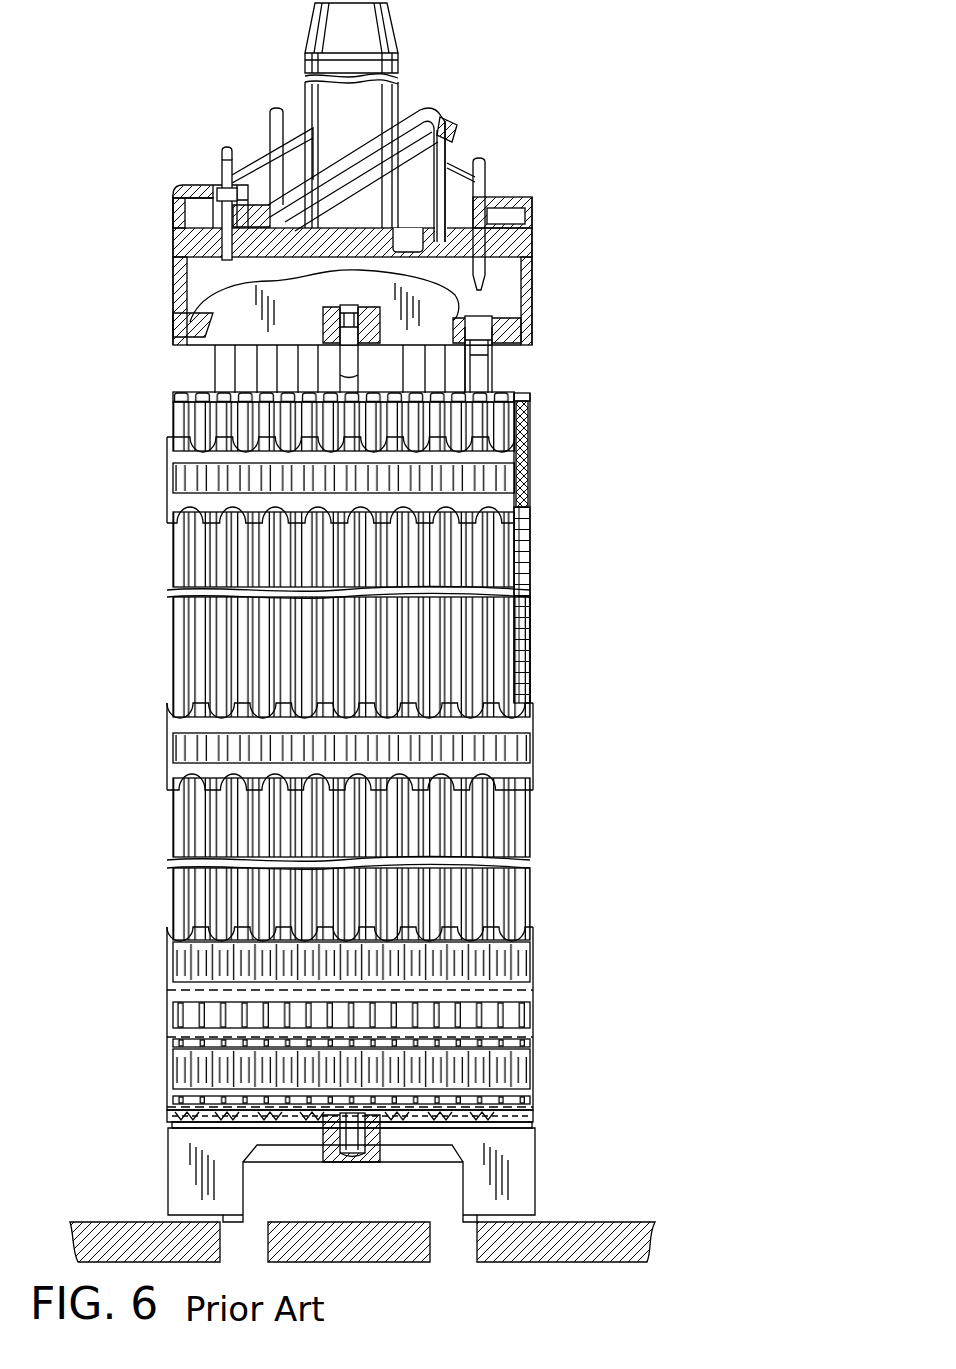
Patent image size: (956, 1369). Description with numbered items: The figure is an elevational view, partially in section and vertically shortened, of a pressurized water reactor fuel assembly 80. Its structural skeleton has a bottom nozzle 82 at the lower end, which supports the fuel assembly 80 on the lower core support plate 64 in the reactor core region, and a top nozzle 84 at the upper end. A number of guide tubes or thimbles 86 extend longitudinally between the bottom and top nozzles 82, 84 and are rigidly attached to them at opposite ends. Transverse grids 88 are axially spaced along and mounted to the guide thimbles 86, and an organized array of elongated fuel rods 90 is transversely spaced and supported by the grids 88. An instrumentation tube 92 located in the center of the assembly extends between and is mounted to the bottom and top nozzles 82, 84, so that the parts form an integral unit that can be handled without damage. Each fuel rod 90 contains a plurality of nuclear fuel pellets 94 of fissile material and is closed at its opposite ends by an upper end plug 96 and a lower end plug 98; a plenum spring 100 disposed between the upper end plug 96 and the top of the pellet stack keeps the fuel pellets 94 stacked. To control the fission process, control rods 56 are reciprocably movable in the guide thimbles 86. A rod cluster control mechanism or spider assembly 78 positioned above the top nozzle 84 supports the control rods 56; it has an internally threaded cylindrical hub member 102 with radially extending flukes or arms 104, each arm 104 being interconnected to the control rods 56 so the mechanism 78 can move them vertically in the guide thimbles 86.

The control rods 56 is at (535, 324).
The lower core support plate 64 is at (575, 1222).
The rod cluster control mechanism 78 is at (448, 106).
The fuel assembly 80 is at (620, 255).
The bottom nozzle 82 is at (542, 1167).
The top nozzle 84 is at (538, 243).
The guide thimbles 86 is at (213, 380).
The transverse grids 88 is at (175, 490).
The fuel rods 90 is at (175, 655).
The instrumentation tube 92 is at (345, 1115).
The nuclear fuel pellets 94 is at (533, 552).
The upper end plug 96 is at (533, 403).
The lower end plug 98 is at (542, 1110).
The plenum spring 100 is at (533, 463).
The cylindrical hub member 102 is at (407, 97).
The arms 104 is at (256, 168).